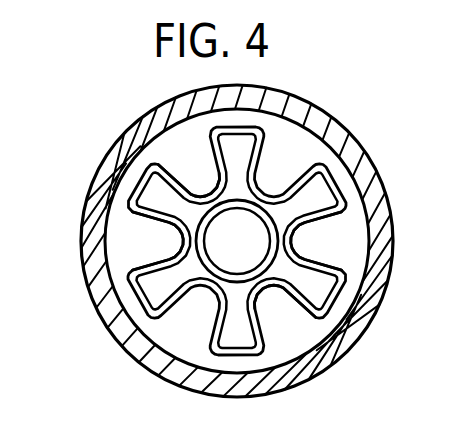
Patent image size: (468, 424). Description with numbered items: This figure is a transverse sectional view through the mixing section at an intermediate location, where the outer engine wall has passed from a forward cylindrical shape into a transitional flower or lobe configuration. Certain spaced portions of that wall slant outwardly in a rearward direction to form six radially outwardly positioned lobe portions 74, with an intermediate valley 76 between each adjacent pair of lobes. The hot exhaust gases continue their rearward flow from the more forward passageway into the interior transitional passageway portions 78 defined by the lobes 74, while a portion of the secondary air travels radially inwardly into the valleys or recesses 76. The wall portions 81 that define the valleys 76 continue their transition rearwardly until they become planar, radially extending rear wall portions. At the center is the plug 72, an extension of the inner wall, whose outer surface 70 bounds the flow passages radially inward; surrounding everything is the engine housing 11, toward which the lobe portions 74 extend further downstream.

The engine housing 11 is at (318, 107).
The outer surface of the plug 70 is at (350, 136).
The plug 72 is at (277, 223).
The lobe portions 74 is at (150, 173).
The valley 76 is at (195, 177).
The interior transitional passageway portions 78 is at (155, 200).
The wall portions 81 is at (160, 257).